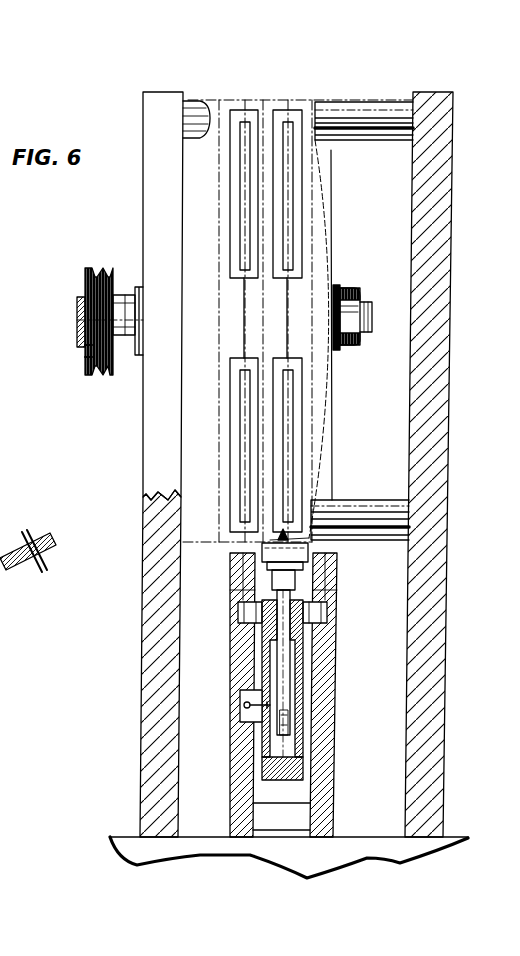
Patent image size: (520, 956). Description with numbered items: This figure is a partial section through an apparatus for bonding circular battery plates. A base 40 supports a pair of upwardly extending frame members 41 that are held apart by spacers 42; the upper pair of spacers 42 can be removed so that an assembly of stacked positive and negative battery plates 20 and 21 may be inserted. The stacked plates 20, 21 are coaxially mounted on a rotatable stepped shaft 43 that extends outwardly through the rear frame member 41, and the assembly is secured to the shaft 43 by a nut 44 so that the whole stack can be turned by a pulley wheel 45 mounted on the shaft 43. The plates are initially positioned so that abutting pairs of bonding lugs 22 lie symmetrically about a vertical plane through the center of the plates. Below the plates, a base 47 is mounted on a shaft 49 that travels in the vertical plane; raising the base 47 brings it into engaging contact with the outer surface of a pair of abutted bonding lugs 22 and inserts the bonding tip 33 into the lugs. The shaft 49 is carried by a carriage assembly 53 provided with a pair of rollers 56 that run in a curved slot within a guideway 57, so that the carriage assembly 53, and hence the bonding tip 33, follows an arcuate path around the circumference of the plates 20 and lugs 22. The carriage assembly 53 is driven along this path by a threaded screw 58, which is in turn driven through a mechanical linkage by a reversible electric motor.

The positive battery plates 20 is at (307, 293).
The negative battery plates 21 is at (238, 208).
The bonding lugs 22 is at (273, 533).
The bonding tip 33 is at (281, 539).
The base 40 is at (367, 840).
The frame members 41 is at (143, 222).
The spacers 42 is at (355, 138).
The rotatable stepped shaft 43 is at (85, 318).
The nut 44 is at (350, 348).
The pulley wheel 45 is at (88, 358).
The base 47 is at (308, 562).
The shaft 49 is at (280, 658).
The carriage assembly 53 is at (268, 767).
The rollers 56 is at (327, 612).
The guideway 57 is at (323, 736).
The threaded screw 58 is at (242, 710).